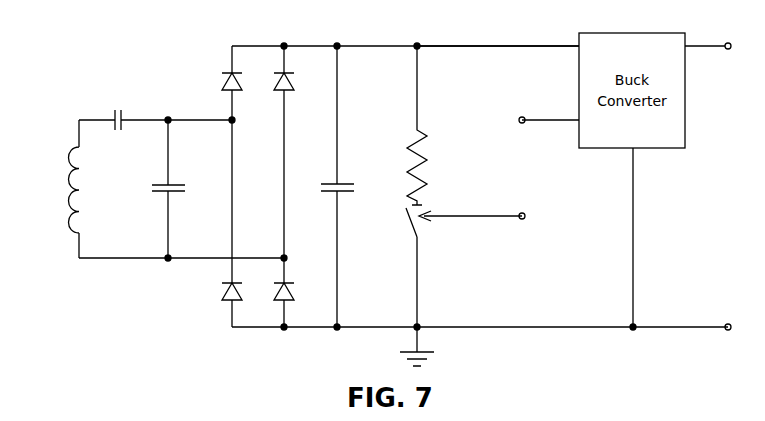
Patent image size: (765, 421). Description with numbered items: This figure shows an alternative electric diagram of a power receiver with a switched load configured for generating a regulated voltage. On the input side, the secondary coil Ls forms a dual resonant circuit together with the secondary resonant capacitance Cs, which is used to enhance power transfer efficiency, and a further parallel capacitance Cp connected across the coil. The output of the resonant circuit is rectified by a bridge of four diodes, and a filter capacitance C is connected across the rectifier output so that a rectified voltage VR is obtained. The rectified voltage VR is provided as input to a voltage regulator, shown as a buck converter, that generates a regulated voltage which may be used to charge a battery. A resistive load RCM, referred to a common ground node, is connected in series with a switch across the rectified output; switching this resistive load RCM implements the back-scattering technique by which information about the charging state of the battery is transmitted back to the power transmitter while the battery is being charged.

The secondary resonant capacitance Cs is at (117, 107).
The secondary coil Ls is at (59, 189).
The parallel capacitor Cp is at (159, 189).
The filter capacitor C is at (334, 186).
The resistive load RCM is at (435, 186).
The rectified voltage VR is at (498, 35).